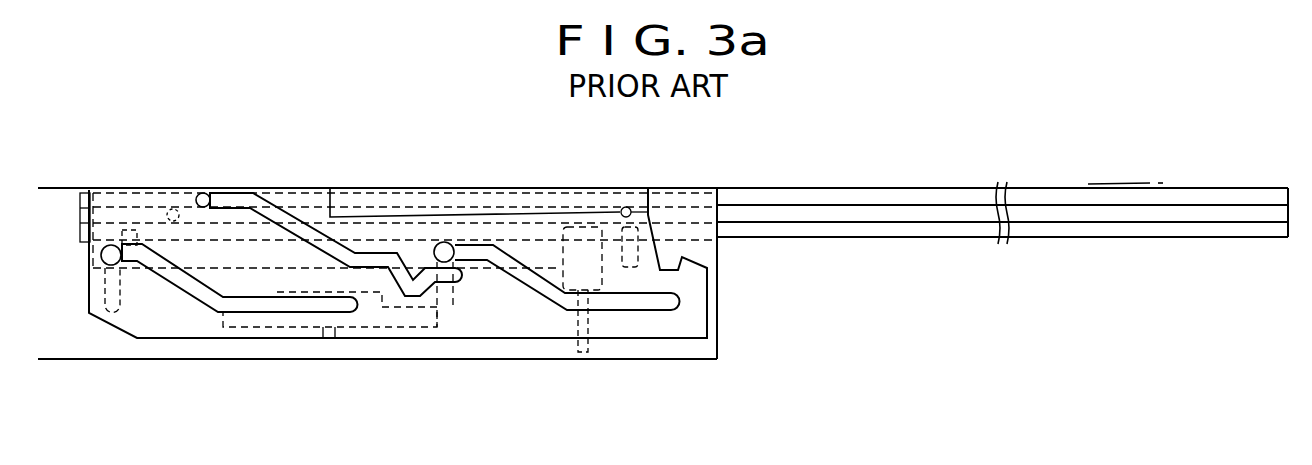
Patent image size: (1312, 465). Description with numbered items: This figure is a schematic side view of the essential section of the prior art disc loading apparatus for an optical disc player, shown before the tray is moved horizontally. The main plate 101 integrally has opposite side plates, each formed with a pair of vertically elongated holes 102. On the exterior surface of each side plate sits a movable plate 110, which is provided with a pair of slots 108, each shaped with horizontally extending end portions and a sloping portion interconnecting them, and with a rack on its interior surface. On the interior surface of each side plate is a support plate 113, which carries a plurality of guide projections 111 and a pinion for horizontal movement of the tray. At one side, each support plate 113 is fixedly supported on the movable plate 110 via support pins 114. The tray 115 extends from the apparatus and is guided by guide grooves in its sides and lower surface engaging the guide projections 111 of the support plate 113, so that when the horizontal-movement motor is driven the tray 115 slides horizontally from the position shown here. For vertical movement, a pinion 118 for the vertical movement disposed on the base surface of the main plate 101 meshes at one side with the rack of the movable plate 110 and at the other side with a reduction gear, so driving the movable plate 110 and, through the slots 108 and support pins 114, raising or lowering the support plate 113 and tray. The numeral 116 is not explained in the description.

The main plate 101 is at (673, 357).
The vertically elongated holes 102 is at (448, 303).
The slots 108 is at (528, 283).
The movable plate 110 is at (177, 320).
The guide projections 111 is at (168, 209).
The support plate 113 is at (253, 263).
The support pins 114 is at (444, 242).
The tray 115 is at (822, 228).
The rod 116 is at (913, 215).
The pinion for the vertical movement 118 is at (367, 320).